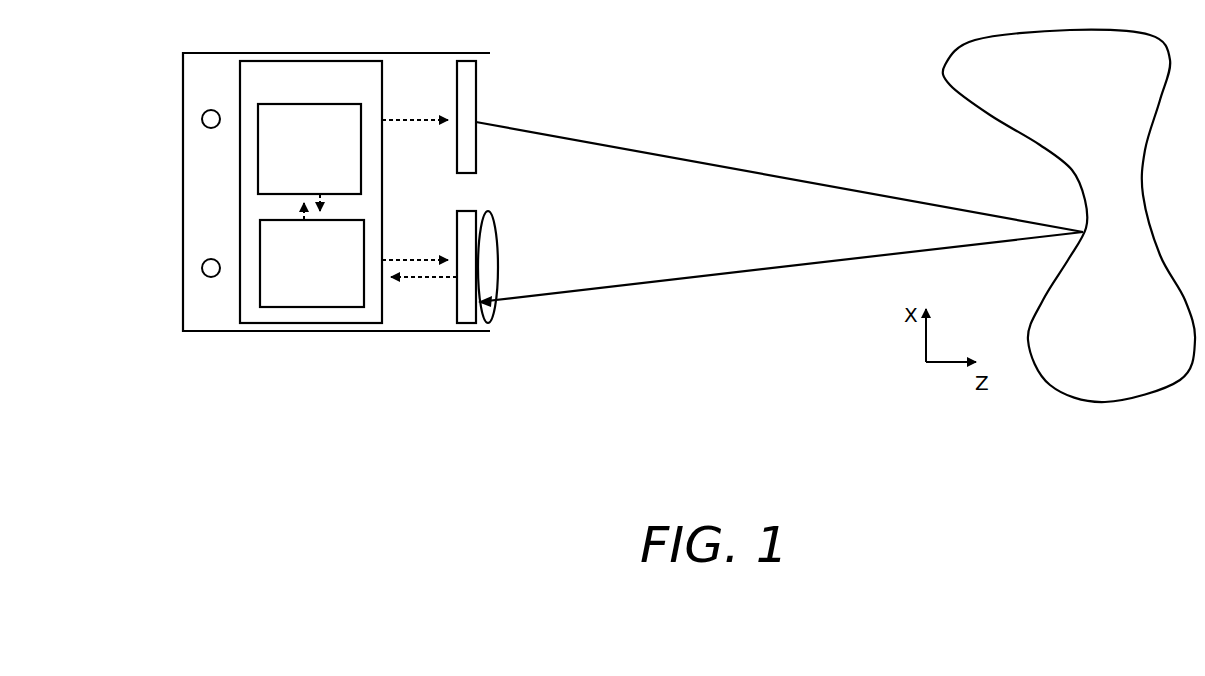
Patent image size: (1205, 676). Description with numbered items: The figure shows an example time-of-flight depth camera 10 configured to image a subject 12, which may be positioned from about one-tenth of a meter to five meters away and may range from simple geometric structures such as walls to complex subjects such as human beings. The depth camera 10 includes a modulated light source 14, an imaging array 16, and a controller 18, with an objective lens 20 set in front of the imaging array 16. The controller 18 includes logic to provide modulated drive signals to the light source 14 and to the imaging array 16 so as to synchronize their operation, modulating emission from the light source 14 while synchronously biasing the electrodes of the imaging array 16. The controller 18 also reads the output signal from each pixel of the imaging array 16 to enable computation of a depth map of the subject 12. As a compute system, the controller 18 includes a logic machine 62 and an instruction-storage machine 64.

The time-of-flight depth camera 10 is at (222, 205).
The subject 12 is at (1141, 119).
The modulated light source 14 is at (476, 82).
The imaging array 16 is at (457, 222).
The controller 18 is at (322, 96).
The objective lens 20 is at (498, 260).
The logic machine 62 is at (319, 159).
The instruction-storage machine 64 is at (322, 274).